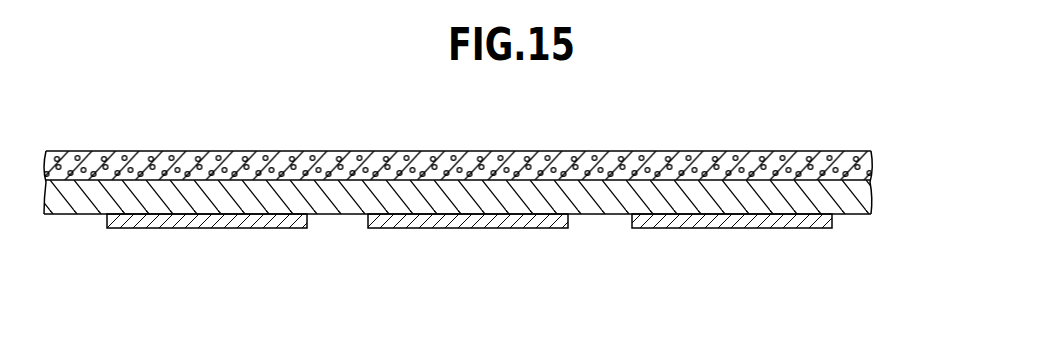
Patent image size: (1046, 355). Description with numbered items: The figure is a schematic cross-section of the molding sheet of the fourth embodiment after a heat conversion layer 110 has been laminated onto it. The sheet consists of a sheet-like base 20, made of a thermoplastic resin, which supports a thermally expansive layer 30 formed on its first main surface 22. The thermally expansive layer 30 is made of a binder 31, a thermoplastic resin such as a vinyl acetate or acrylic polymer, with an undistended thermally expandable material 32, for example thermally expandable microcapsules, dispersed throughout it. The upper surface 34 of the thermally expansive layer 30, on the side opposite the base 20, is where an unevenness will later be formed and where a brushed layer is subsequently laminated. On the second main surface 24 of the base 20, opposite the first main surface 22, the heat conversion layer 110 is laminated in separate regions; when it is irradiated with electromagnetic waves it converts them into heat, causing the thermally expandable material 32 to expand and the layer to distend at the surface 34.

The base 20 is at (873, 203).
The first main surface 22 is at (583, 183).
The second main surface 24 is at (337, 216).
The thermally expansive layer 30 is at (503, 178).
The binder 31 is at (873, 156).
The thermally expandable material 32 is at (485, 175).
The surface 34 is at (366, 151).
The heat conversion layer 110 is at (208, 229).